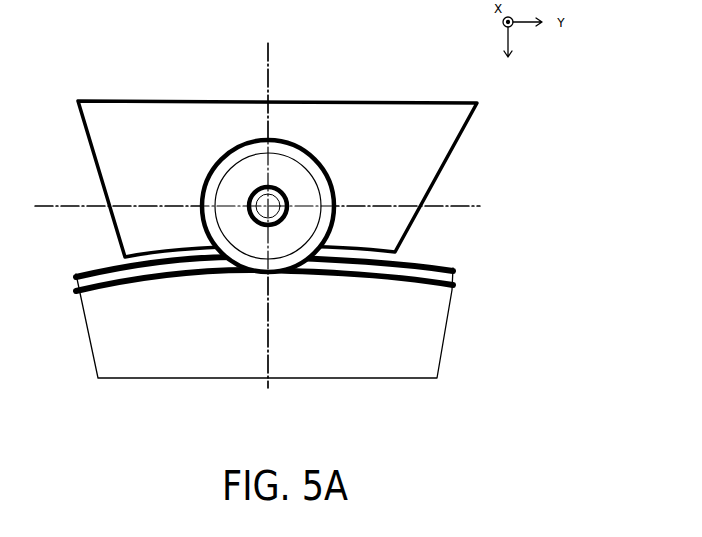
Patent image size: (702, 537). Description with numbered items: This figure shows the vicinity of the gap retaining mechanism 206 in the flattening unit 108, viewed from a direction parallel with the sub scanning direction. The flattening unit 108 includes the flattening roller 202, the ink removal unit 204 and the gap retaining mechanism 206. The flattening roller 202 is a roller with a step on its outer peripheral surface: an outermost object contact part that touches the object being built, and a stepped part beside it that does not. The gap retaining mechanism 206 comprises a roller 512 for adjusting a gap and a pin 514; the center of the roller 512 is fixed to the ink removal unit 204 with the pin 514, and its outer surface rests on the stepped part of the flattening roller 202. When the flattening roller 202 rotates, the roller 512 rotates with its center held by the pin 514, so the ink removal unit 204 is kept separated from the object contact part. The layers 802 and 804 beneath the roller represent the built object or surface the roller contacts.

The optical assembly 108 is at (89, 65).
The flattening roller 202 is at (325, 363).
The ink removal unit 204 is at (115, 136).
The gap retaining mechanism 206 is at (390, 200).
The roller for adjusting a gap 512 is at (335, 195).
The pin 514 is at (272, 209).
The glass laminate upper layer 802 is at (280, 288).
The glass laminate lower layer 804 is at (178, 282).